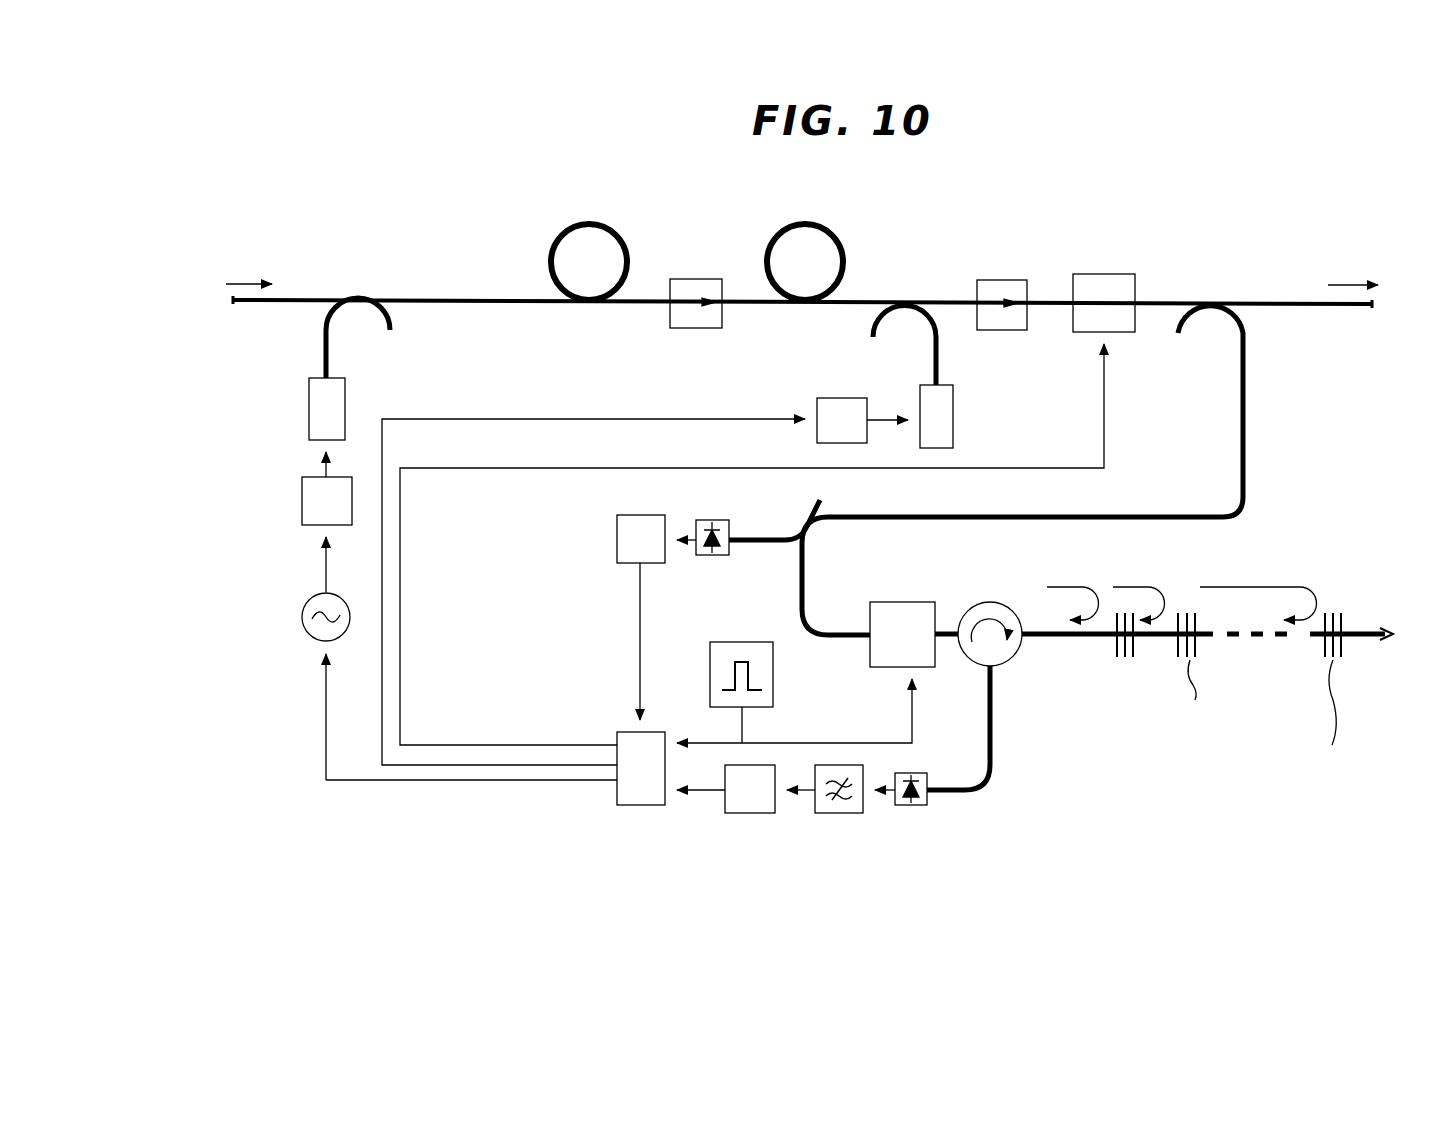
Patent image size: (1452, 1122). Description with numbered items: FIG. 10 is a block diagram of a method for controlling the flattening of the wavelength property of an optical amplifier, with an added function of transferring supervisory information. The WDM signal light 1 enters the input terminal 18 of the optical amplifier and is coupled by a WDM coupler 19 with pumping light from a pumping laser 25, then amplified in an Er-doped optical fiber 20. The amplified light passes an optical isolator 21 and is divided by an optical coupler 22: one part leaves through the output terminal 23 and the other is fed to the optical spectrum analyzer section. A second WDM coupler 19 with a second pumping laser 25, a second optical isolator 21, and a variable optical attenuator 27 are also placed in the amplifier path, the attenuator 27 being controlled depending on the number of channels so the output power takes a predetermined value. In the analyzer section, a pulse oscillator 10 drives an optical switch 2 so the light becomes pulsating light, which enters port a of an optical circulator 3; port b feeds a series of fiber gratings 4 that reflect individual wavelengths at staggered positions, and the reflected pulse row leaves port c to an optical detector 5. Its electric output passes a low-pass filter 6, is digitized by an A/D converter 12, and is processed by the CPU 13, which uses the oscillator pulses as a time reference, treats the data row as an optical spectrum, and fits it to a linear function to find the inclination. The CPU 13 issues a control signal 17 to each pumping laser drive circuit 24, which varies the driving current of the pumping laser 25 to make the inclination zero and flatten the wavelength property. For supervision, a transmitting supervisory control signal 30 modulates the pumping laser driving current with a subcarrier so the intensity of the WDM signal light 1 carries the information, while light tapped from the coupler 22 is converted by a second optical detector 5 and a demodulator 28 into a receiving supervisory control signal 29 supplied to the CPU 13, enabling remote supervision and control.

The WDM signal light 1 is at (1365, 255).
The optical switch 2 is at (905, 602).
The optical circulator 3 is at (1018, 655).
The fiber gratings 4 is at (1333, 613).
The optical detector 5 is at (729, 525).
The low-pass filter 6 is at (838, 813).
The pulse oscillator 10 is at (773, 685).
The A/D converter 12 is at (745, 813).
The CPU 13 is at (627, 805).
The control signal 17 is at (382, 482).
The input terminal 18 is at (248, 305).
The WDM coupler 19 is at (915, 272).
The Er-doped optical fiber 20 is at (878, 195).
The optical isolator 21 is at (700, 279).
The optical coupler 22 is at (856, 562).
The output terminal 23 is at (1283, 305).
The pumping laser drive circuit 24 is at (302, 503).
The pumping laser 25 is at (345, 405).
The variable optical attenuator 27 is at (1103, 274).
The demodulator 28 is at (665, 548).
The receiving supervisory control signal 29 is at (640, 588).
The supervisory control signal 30 is at (326, 727).